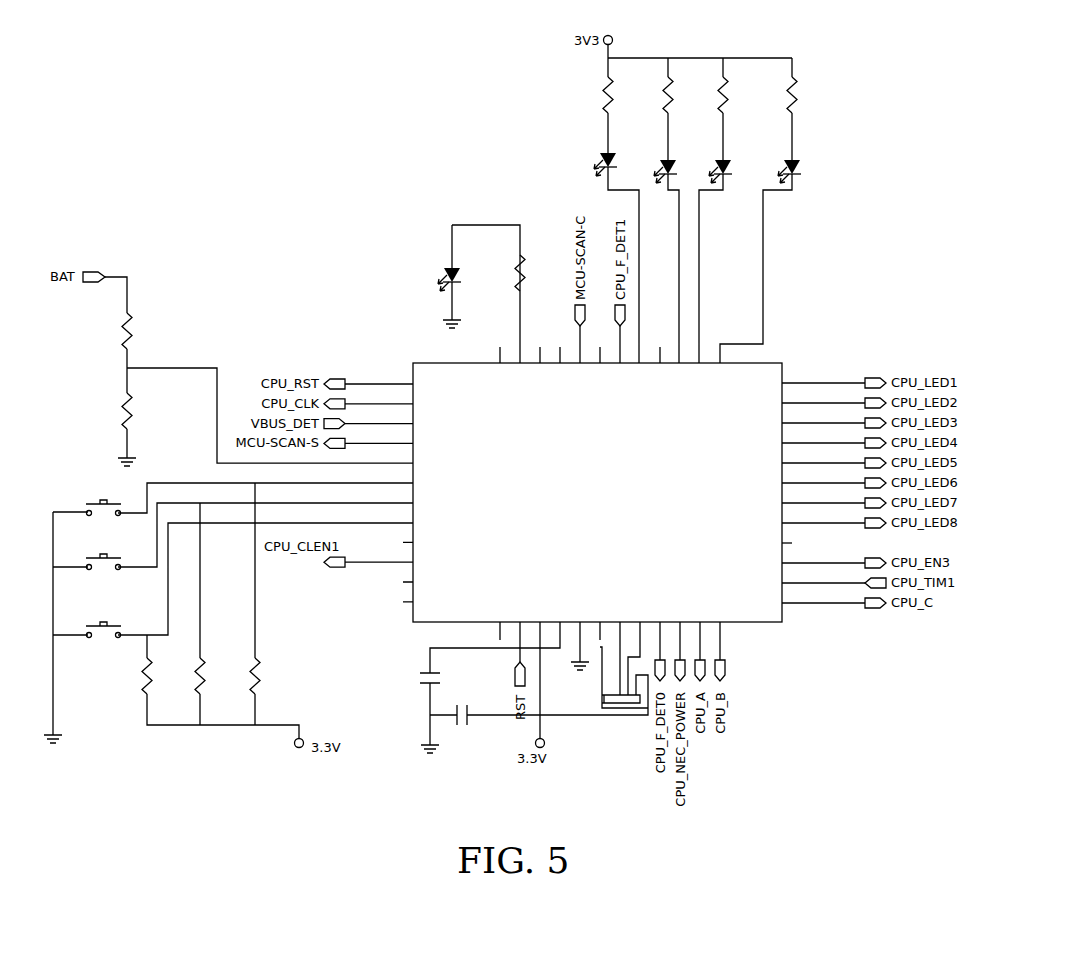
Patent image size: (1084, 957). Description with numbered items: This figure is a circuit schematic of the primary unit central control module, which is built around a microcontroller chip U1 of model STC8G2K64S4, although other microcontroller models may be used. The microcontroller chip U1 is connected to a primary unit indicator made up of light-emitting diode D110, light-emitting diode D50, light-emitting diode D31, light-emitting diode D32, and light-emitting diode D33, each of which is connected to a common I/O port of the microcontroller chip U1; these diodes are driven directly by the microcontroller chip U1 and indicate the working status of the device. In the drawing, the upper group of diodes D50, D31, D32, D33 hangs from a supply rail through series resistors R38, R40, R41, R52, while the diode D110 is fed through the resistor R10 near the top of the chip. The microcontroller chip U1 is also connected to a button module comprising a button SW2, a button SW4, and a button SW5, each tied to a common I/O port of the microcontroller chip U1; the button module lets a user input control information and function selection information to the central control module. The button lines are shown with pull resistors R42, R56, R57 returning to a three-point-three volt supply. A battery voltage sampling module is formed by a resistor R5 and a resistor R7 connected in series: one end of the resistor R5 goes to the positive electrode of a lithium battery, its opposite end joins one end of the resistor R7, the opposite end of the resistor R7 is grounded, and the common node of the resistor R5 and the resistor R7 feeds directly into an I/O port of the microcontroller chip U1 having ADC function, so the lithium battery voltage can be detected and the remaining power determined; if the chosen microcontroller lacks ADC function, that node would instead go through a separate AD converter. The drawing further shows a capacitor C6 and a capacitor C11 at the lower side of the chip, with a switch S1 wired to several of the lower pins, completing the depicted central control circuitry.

The microcontroller chip U1 is at (597, 492).
The resistor R5 is at (149, 331).
The resistor R7 is at (149, 411).
The resistor 1.8K R10 is at (538, 272).
The resistor 4K7 R38 is at (590, 92).
The resistor 4K7 R40 is at (649, 93).
The resistor 4K7 R41 is at (706, 92).
The resistor 4K7 R52 is at (776, 92).
The resistor 100K R42 is at (128, 676).
The resistor 100K R56 is at (182, 676).
The resistor 100K R57 is at (237, 676).
The light-emitting diode D50 is at (600, 156).
The light-emitting diode D31 is at (660, 160).
The light-emitting diode D32 is at (715, 160).
The light-emitting diode D33 is at (782, 160).
The light-emitting diode D110 is at (436, 266).
The capacitor 100nF C6 is at (411, 685).
The capacitor 100nF C11 is at (475, 732).
The switch S1 is at (611, 674).
The button SW2 is at (104, 517).
The button SW4 is at (104, 571).
The button SW5 is at (104, 639).